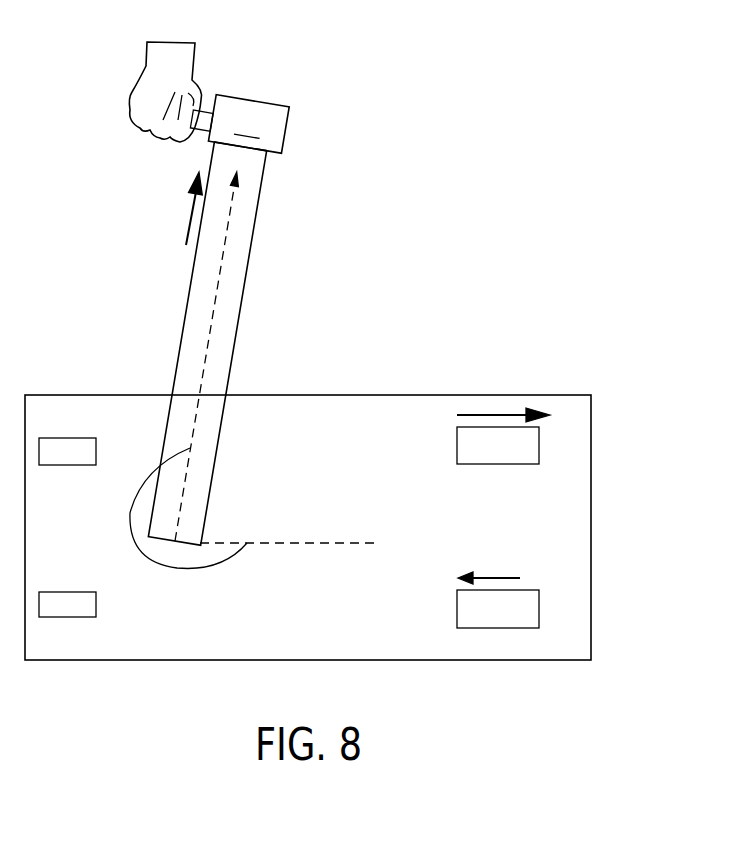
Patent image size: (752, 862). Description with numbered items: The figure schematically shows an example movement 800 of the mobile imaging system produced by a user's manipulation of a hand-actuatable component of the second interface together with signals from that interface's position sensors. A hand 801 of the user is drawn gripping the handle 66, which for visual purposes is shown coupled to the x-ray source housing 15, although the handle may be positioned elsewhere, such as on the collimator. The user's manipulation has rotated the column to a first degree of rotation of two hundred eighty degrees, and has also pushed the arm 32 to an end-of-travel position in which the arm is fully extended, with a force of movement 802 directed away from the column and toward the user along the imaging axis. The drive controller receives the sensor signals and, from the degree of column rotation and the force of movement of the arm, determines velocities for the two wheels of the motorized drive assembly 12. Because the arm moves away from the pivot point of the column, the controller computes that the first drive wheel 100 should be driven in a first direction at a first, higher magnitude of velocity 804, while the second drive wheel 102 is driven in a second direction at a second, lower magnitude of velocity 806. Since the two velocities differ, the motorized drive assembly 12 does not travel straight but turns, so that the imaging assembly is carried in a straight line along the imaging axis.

The movement 800 is at (621, 133).
The hand 801 is at (168, 42).
The handle 66 is at (204, 108).
The x-ray source housing 15 is at (248, 124).
The force of movement 802 is at (188, 220).
The arm 32 is at (177, 363).
The motorized drive assembly 12 is at (591, 470).
The first drive wheel 100 is at (515, 456).
The second drive wheel 102 is at (515, 621).
The first velocity 804 is at (491, 412).
The second velocity 806 is at (492, 573).